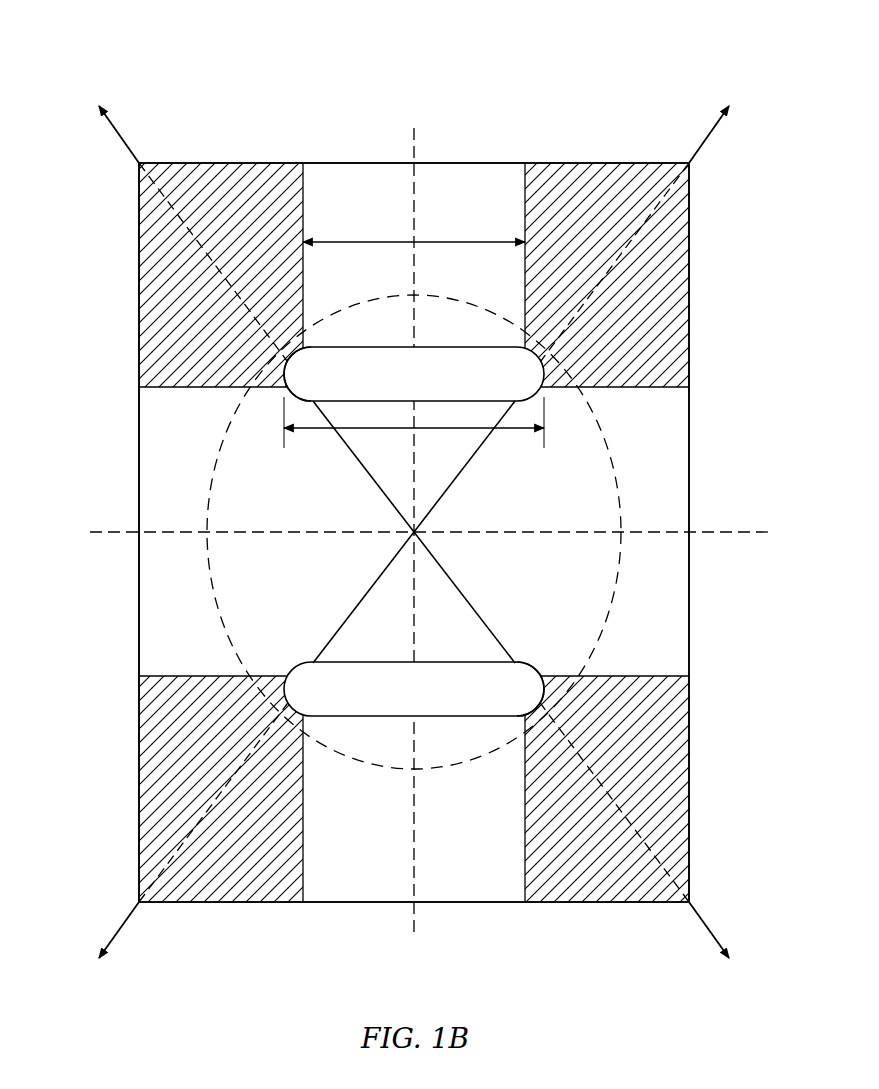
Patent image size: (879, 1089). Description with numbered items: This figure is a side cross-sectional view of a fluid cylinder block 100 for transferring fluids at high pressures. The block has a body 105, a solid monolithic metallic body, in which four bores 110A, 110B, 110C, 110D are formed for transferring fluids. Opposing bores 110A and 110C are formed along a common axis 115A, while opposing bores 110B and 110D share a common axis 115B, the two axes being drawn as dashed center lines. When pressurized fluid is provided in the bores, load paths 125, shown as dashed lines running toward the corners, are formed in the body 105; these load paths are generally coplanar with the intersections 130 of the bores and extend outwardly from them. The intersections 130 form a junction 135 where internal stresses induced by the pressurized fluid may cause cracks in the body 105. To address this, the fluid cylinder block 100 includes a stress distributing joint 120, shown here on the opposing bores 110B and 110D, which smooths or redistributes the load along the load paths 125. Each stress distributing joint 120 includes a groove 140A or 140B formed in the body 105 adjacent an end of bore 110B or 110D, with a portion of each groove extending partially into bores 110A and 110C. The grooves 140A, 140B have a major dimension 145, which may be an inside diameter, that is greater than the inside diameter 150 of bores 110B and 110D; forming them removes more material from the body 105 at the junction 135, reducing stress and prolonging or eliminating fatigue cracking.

The fluid cylinder block 100 is at (672, 76).
The body 105 is at (670, 222).
The bore 110A is at (143, 661).
The bore 110B is at (397, 162).
The bore 110C is at (694, 568).
The bore 110D is at (351, 890).
The common axis 115A is at (748, 530).
The common axis 115B is at (416, 838).
The stress distributing joint 120 is at (304, 361).
The load path 125 is at (120, 134).
The intersection 130 is at (370, 478).
The junction 135 is at (600, 417).
The groove 140A is at (287, 380).
The groove 140B is at (288, 702).
The major dimension 145 is at (455, 428).
The inside diameter 150 is at (383, 241).